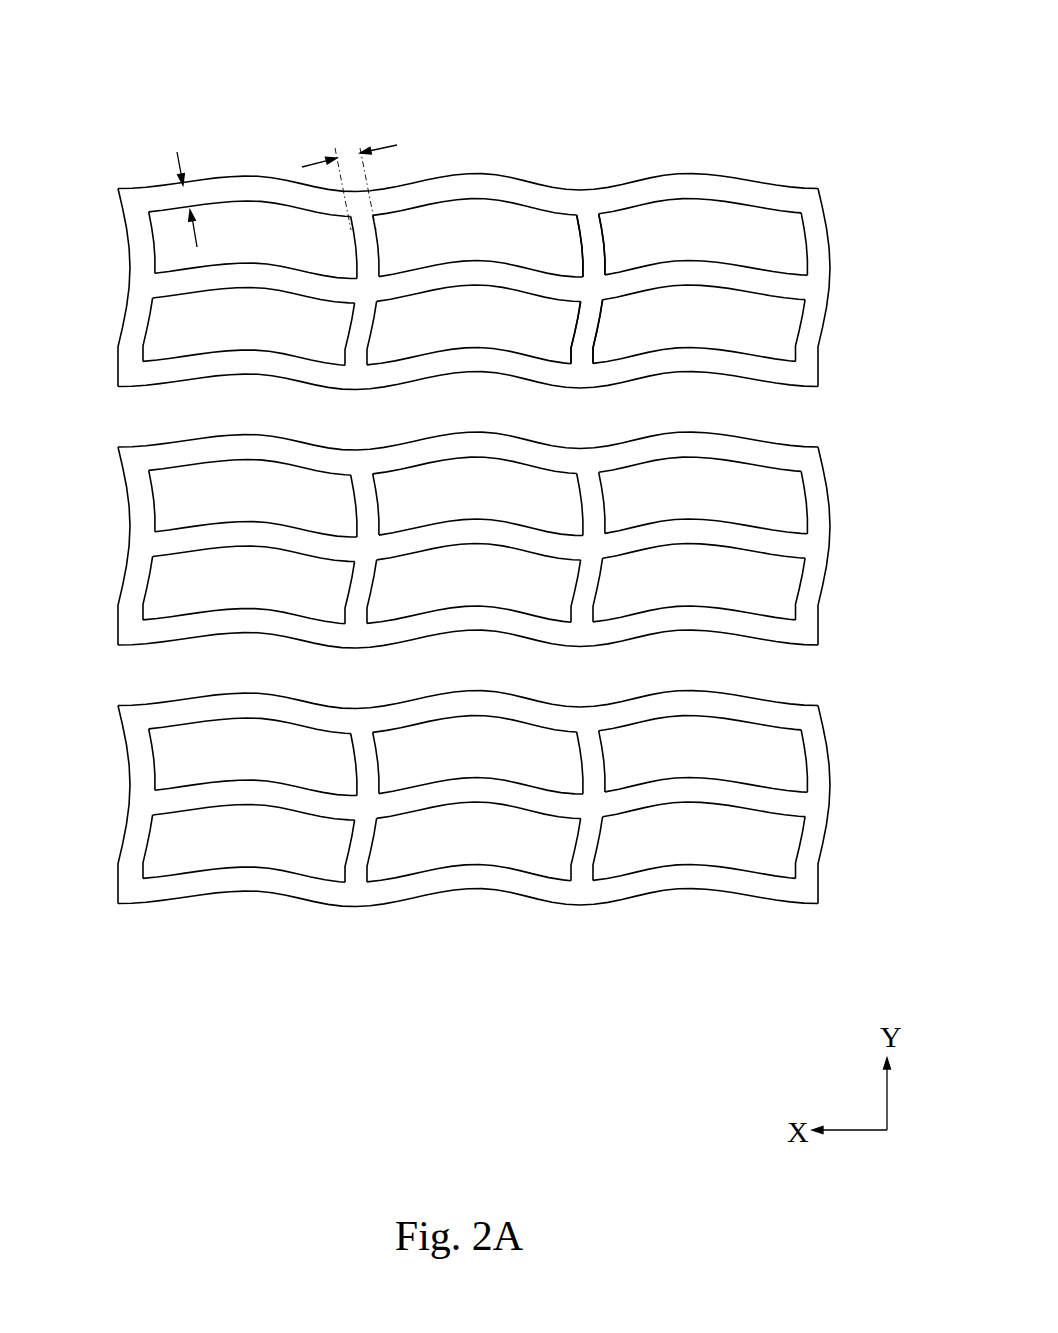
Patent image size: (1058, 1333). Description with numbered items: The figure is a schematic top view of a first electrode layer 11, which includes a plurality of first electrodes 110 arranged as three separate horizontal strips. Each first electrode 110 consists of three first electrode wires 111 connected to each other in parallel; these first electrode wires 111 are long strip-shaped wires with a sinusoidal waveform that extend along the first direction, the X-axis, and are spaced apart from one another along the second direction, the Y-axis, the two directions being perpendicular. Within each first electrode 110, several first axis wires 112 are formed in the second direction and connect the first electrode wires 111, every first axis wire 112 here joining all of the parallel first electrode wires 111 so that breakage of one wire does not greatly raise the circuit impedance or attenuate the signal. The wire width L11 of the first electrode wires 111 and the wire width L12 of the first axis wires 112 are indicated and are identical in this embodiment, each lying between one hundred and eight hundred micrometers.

The first electrode layer 11 is at (62, 30).
The first electrode 110 is at (836, 209).
The first electrode wire 111 is at (703, 173).
The first axis wire 112 is at (578, 245).
The wire width of the first electrode wires L11 is at (176, 180).
The wire width of the first axis wires L12 is at (349, 172).